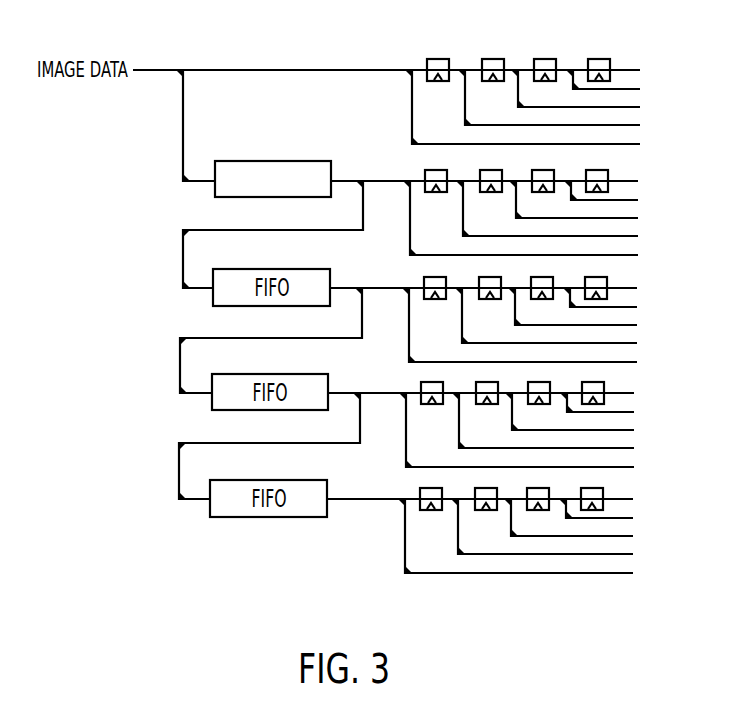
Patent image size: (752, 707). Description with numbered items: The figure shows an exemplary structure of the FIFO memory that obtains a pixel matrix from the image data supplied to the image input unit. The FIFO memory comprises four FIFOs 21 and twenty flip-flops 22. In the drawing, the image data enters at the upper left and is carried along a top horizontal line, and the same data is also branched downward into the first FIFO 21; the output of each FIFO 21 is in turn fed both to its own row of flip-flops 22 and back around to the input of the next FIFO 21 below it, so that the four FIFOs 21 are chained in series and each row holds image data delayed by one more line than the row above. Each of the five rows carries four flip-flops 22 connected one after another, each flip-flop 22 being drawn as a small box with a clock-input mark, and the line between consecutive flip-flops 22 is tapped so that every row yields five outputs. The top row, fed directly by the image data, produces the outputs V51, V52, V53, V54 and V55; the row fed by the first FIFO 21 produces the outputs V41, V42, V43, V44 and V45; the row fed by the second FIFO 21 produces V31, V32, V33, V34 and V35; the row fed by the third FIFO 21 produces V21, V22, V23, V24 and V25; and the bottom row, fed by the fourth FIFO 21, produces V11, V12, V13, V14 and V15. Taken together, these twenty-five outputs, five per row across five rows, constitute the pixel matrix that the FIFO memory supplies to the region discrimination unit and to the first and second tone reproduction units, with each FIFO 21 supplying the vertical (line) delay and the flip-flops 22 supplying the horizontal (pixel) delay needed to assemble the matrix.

The FIFO 21 is at (273, 153).
The flip-flop 22 is at (437, 0).
The pixel data output V11 is at (494, 499).
The pixel data output V12 is at (610, 515).
The pixel data output V13 is at (582, 524).
The pixel data output V14 is at (556, 533).
The pixel data output V15 is at (529, 542).
The pixel data output V21 is at (495, 393).
The pixel data output V22 is at (611, 409).
The pixel data output V23 is at (583, 418).
The pixel data output V24 is at (557, 427).
The pixel data output V25 is at (530, 436).
The pixel data output V31 is at (497, 288).
The pixel data output V32 is at (614, 304).
The pixel data output V33 is at (586, 313).
The pixel data output V34 is at (560, 322).
The pixel data output V35 is at (533, 331).
The pixel data output V41 is at (498, 181).
The pixel data output V42 is at (615, 197).
The pixel data output V43 is at (587, 206).
The pixel data output V44 is at (561, 215).
The pixel data output V45 is at (534, 224).
The pixel data output V51 is at (400, 70).
The pixel data output V52 is at (617, 86).
The pixel data output V53 is at (589, 95).
The pixel data output V54 is at (563, 104).
The pixel data output V55 is at (536, 113).